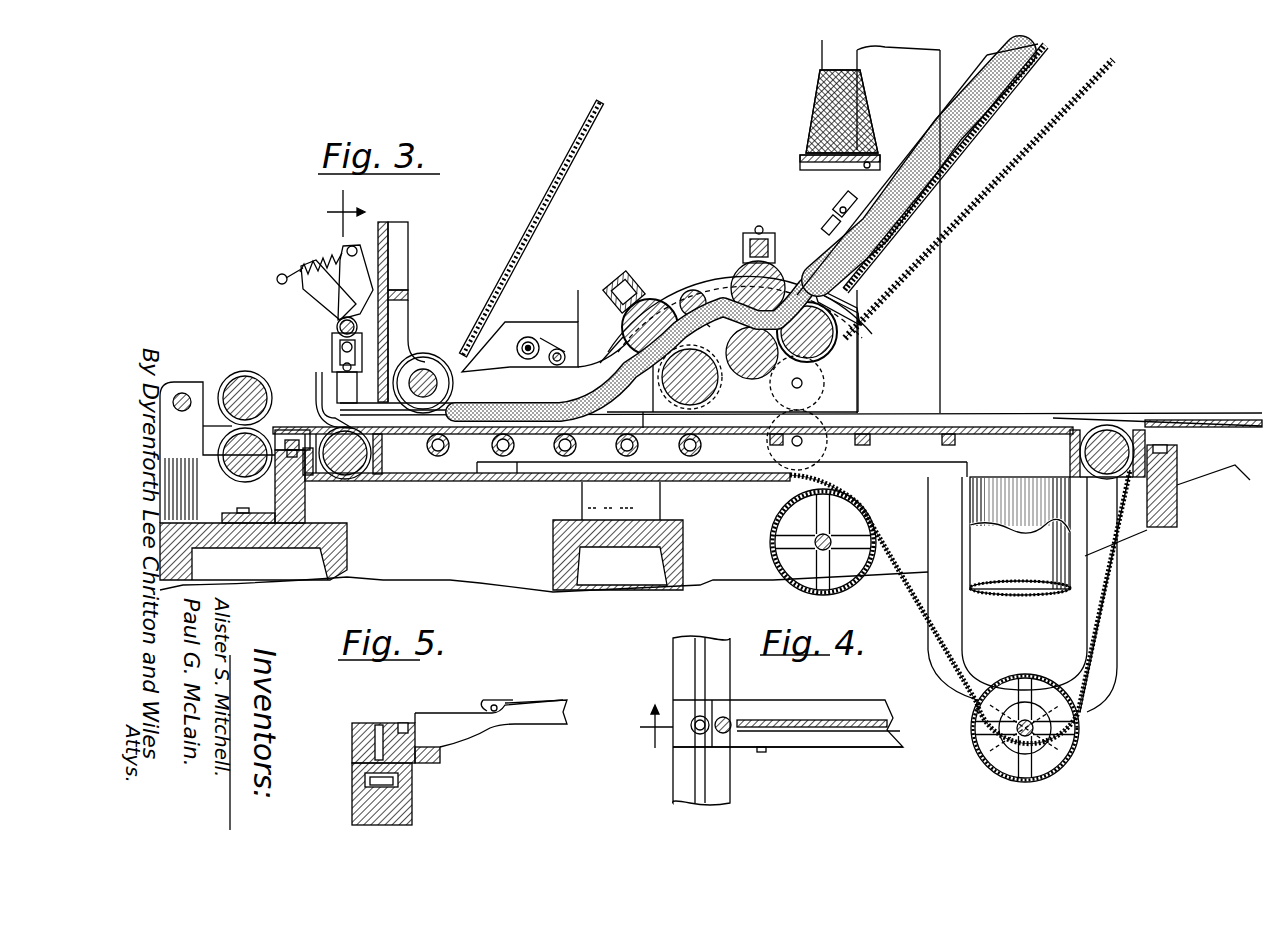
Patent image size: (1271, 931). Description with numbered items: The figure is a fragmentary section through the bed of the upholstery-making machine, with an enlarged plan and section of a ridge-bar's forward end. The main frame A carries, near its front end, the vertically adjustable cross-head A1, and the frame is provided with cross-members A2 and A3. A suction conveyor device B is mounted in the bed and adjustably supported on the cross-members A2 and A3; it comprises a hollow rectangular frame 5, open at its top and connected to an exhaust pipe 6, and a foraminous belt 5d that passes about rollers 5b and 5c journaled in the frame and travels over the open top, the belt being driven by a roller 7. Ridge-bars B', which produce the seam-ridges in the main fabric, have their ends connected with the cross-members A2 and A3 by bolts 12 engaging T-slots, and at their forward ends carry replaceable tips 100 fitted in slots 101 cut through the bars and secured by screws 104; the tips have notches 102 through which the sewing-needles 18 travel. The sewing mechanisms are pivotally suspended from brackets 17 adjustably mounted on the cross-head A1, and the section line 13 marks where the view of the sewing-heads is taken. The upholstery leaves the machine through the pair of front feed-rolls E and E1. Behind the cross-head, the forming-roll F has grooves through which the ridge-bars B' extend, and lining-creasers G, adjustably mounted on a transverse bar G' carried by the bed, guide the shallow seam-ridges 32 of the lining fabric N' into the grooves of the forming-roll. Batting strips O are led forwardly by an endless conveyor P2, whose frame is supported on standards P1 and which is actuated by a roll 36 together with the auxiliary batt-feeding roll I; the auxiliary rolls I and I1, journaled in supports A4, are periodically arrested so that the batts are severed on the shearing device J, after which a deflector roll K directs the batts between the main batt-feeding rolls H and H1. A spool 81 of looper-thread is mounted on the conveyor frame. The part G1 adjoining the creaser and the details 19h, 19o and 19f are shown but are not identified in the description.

In FIG. 3, the cross-head A1 is at (403, 252).
In FIG. 3, the section line 13 is at (337, 212).
In FIG. 3, the forming-roll F is at (427, 363).
In FIG. 3, the lining-creaser G is at (305, 282).
In FIG. 3, the bracket 17 is at (350, 267).
In FIG. 3, the lever pivot link G1 is at (334, 324).
In FIG. 3, the front feed-roll E1 is at (217, 432).
In FIG. 3, the front feed-roll E is at (233, 477).
In FIG. 3, the bolt 12 is at (273, 482).
In FIG. 5, the bolt 12 is at (352, 744).
In FIG. 4, the bolt 12 is at (693, 733).
In FIG. 3, the cross-member A2 is at (307, 497).
In FIG. 5, the cross-member A2 is at (412, 792).
In FIG. 3, the replaceable tip 100 is at (320, 395).
In FIG. 5, the replaceable tip 100 is at (507, 702).
In FIG. 4, the replaceable tip 100 is at (772, 720).
In FIG. 3, the screw 104 is at (305, 428).
In FIG. 4, the screw 104 is at (760, 752).
In FIG. 3, the ridge-bar B' is at (767, 440).
In FIG. 5, the ridge-bar B' is at (527, 712).
In FIG. 4, the ridge-bar B' is at (788, 705).
In FIG. 3, the transverse bar G' is at (697, 436).
In FIG. 3, the hollow rectangular frame 5 is at (455, 470).
In FIG. 4, the hollow rectangular frame 5 is at (652, 726).
In FIG. 3, the roller 5b is at (363, 482).
In FIG. 3, the suction conveyor device B is at (369, 484).
In FIG. 3, the roller 5c is at (1110, 443).
In FIG. 3, the cross-member A3 is at (1177, 518).
In FIG. 3, the main frame A is at (557, 547).
In FIG. 3, the exhaust pipe 6 is at (1006, 572).
In FIG. 3, the roller 7 is at (1082, 708).
In FIG. 3, the foraminous belt 5d is at (1105, 620).
In FIG. 3, the main batt-feeding roll H is at (613, 367).
In FIG. 3, the roll bearing block 19h is at (610, 292).
In FIG. 3, the deflector roll K is at (688, 294).
In FIG. 3, the main batt-feeding roll H1 is at (653, 300).
In FIG. 3, the shearing device J is at (720, 305).
In FIG. 3, the auxiliary batt-feeding roll I is at (757, 372).
In FIG. 3, the roll 36 is at (843, 343).
In FIG. 3, the support A4 is at (697, 290).
In FIG. 3, the auxiliary batt-feeding roll I1 is at (833, 280).
In FIG. 3, the strip of batting O is at (980, 115).
In FIG. 3, the standard P1 is at (948, 272).
In FIG. 3, the endless conveyor P2 is at (1102, 72).
In FIG. 3, the spool 81 is at (813, 110).
In FIG. 3, the seam-ridge 32 is at (577, 132).
In FIG. 3, the lining fabric N' is at (520, 256).
In FIG. 3, the eye guide 19o is at (526, 342).
In FIG. 3, the guide ring 19f is at (545, 362).
In FIG. 5, the sewing needle 18 is at (480, 710).
In FIG. 5, the notch 102 is at (488, 705).
In FIG. 4, the slot 101 is at (783, 735).